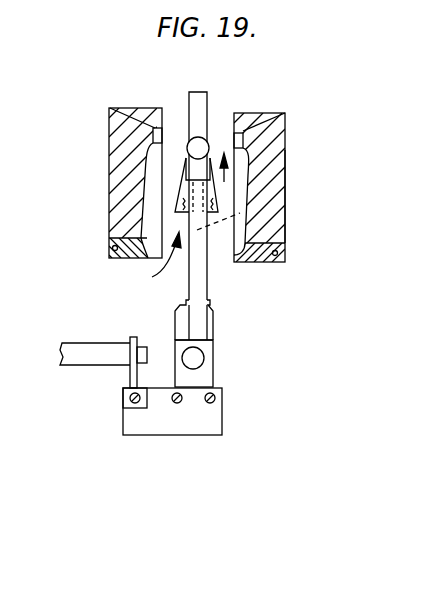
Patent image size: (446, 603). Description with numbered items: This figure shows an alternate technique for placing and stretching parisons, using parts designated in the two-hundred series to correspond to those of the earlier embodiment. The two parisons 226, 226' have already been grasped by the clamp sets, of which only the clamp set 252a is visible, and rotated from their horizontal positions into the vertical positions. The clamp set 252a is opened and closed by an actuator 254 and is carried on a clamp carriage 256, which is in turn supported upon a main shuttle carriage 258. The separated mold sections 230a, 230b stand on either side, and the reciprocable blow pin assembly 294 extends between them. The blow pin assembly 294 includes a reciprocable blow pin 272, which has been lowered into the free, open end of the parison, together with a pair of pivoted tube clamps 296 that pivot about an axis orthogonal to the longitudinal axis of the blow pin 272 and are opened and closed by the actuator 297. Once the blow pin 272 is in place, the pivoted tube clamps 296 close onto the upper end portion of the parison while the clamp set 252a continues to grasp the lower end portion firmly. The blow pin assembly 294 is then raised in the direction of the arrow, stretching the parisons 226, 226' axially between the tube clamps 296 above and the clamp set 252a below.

The parison 226 is at (102, 341).
The parison 226' is at (231, 196).
The mold section 230a is at (109, 153).
The mold section 230b is at (286, 126).
The clamp set 252a is at (212, 328).
The actuator 254 is at (205, 358).
The clamp carriage 256 is at (213, 378).
The main shuttle carriage 258 is at (167, 428).
The blow pin 272 is at (285, 196).
The blow pin assembly 294 is at (167, 219).
The pivoted tube clamps 296 is at (186, 158).
The actuator 297 is at (206, 141).